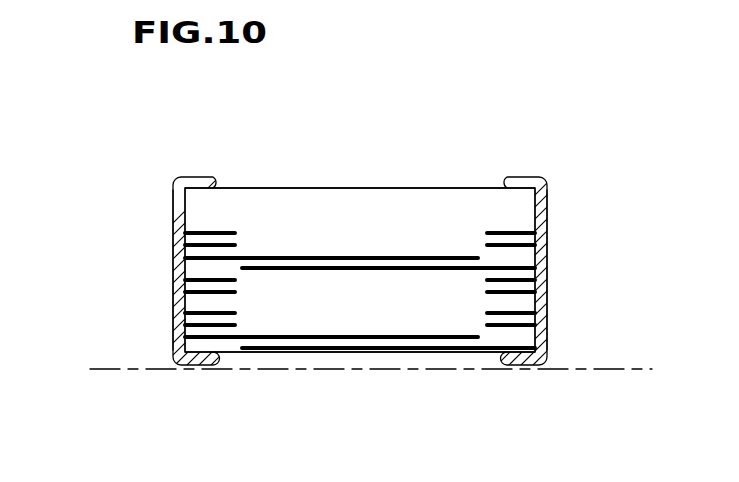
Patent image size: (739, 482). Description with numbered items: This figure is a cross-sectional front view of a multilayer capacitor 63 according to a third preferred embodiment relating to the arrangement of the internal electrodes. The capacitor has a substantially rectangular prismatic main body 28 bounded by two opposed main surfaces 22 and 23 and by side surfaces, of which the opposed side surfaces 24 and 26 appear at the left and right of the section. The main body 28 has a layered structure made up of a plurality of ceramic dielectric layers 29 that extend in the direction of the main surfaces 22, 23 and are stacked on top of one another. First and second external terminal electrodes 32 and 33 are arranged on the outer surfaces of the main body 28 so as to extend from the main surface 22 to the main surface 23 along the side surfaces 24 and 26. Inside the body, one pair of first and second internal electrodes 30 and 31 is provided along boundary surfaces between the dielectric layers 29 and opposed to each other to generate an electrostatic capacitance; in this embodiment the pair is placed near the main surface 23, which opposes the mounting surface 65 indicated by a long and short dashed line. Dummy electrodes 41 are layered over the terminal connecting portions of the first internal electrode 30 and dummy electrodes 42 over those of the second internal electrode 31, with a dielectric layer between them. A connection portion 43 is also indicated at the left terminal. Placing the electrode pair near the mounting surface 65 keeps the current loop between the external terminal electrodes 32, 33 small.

The multilayer capacitor 63 is at (131, 134).
The main surface 22 is at (332, 188).
The main body 28 is at (465, 187).
The main surface 23 is at (372, 356).
The side surface 24 is at (173, 207).
The side surface 26 is at (547, 213).
The first external terminal electrode 32 is at (181, 243).
The second external terminal electrode 33 is at (540, 257).
The dummy electrode 41 is at (212, 232).
The first internal electrode 30 is at (424, 335).
The second internal electrode 31 is at (463, 270).
The dielectric layer 29 is at (288, 330).
The first connection portion 43 is at (213, 292).
The dummy electrode 42 is at (507, 293).
The mounting surface 65 is at (101, 369).